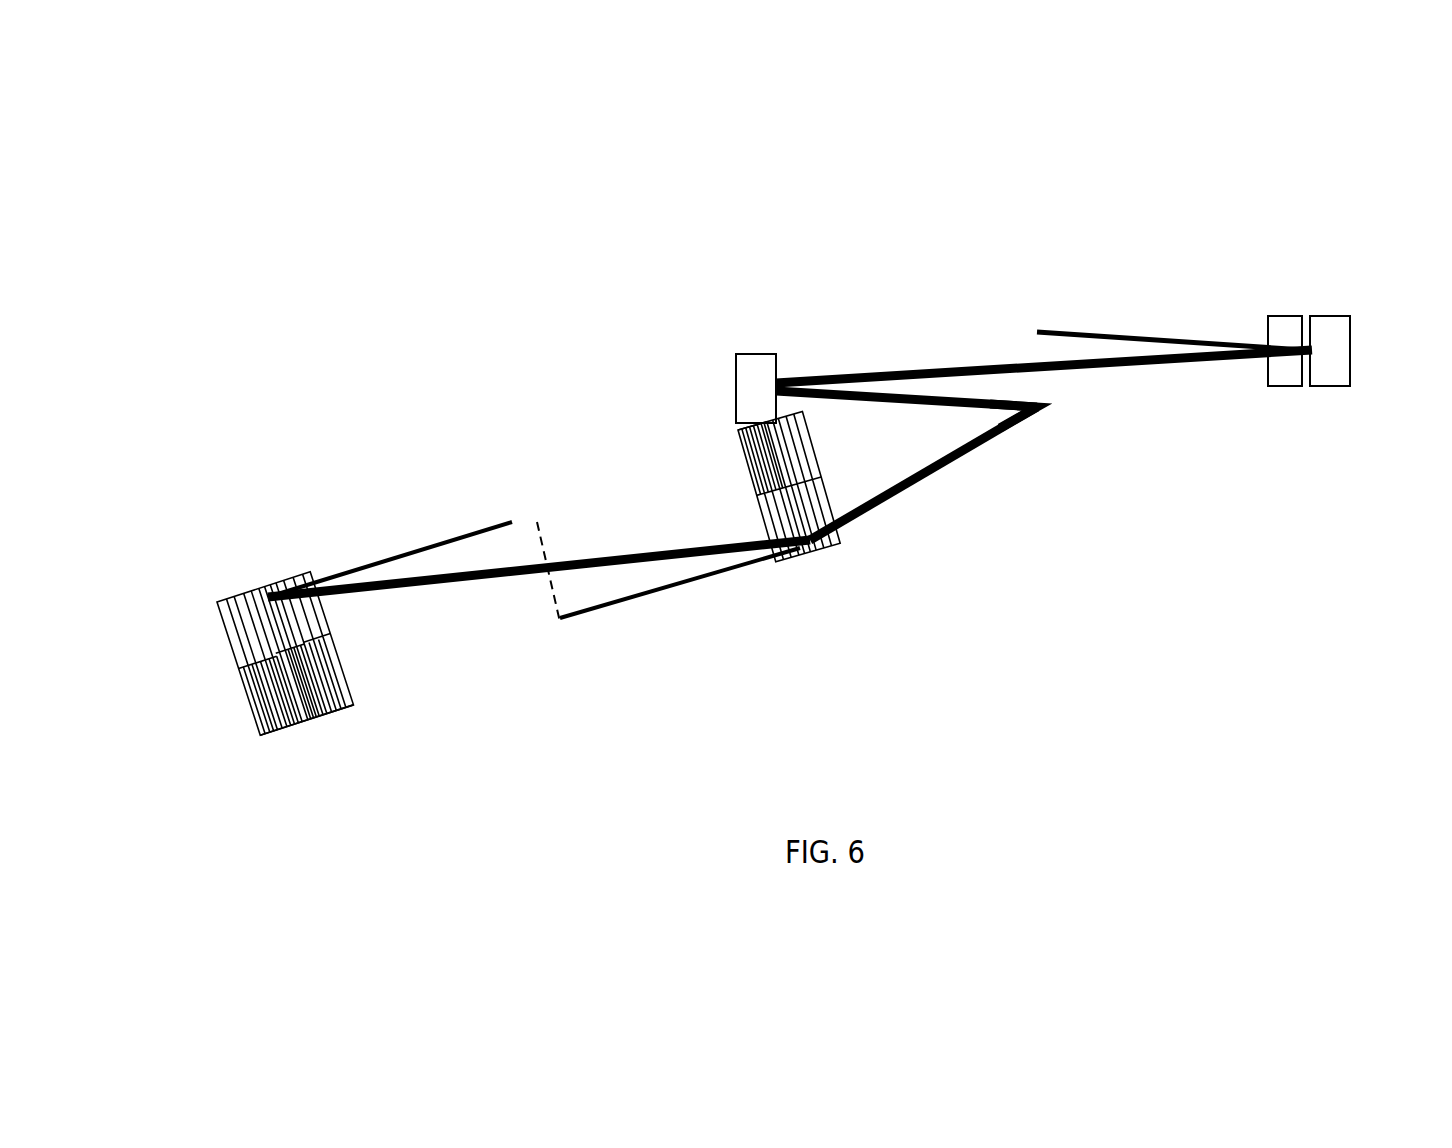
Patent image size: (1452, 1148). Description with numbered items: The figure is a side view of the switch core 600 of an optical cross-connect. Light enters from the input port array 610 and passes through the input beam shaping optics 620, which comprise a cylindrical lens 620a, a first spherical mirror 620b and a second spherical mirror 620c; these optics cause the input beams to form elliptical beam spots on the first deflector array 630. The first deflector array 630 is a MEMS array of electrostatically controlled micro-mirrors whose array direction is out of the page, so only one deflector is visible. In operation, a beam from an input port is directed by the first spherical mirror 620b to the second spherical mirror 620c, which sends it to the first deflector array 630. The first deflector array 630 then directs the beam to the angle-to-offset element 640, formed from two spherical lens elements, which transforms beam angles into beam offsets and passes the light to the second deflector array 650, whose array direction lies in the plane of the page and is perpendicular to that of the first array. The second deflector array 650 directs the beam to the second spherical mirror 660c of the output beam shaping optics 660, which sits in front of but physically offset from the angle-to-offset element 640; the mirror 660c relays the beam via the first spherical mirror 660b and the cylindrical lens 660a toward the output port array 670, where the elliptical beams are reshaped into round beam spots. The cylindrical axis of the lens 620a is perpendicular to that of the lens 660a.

The switch core 600 is at (300, 305).
The input port array 610 is at (1035, 327).
The input beam shaping optics 620 is at (1298, 340).
The cylindrical lens 620a is at (1290, 388).
The first spherical mirror 620b is at (1340, 388).
The second spherical mirror 620c is at (750, 383).
The first deflector array 630 is at (1043, 437).
The angle-to-offset (ATO) element 640 is at (731, 544).
The second deflector array 650 is at (560, 635).
The output beam shaping optics 660 is at (297, 634).
The cylindrical lens 660a is at (327, 713).
The first spherical mirror 660b is at (268, 723).
The second spherical mirror 660c is at (762, 452).
The output port array 670 is at (512, 520).